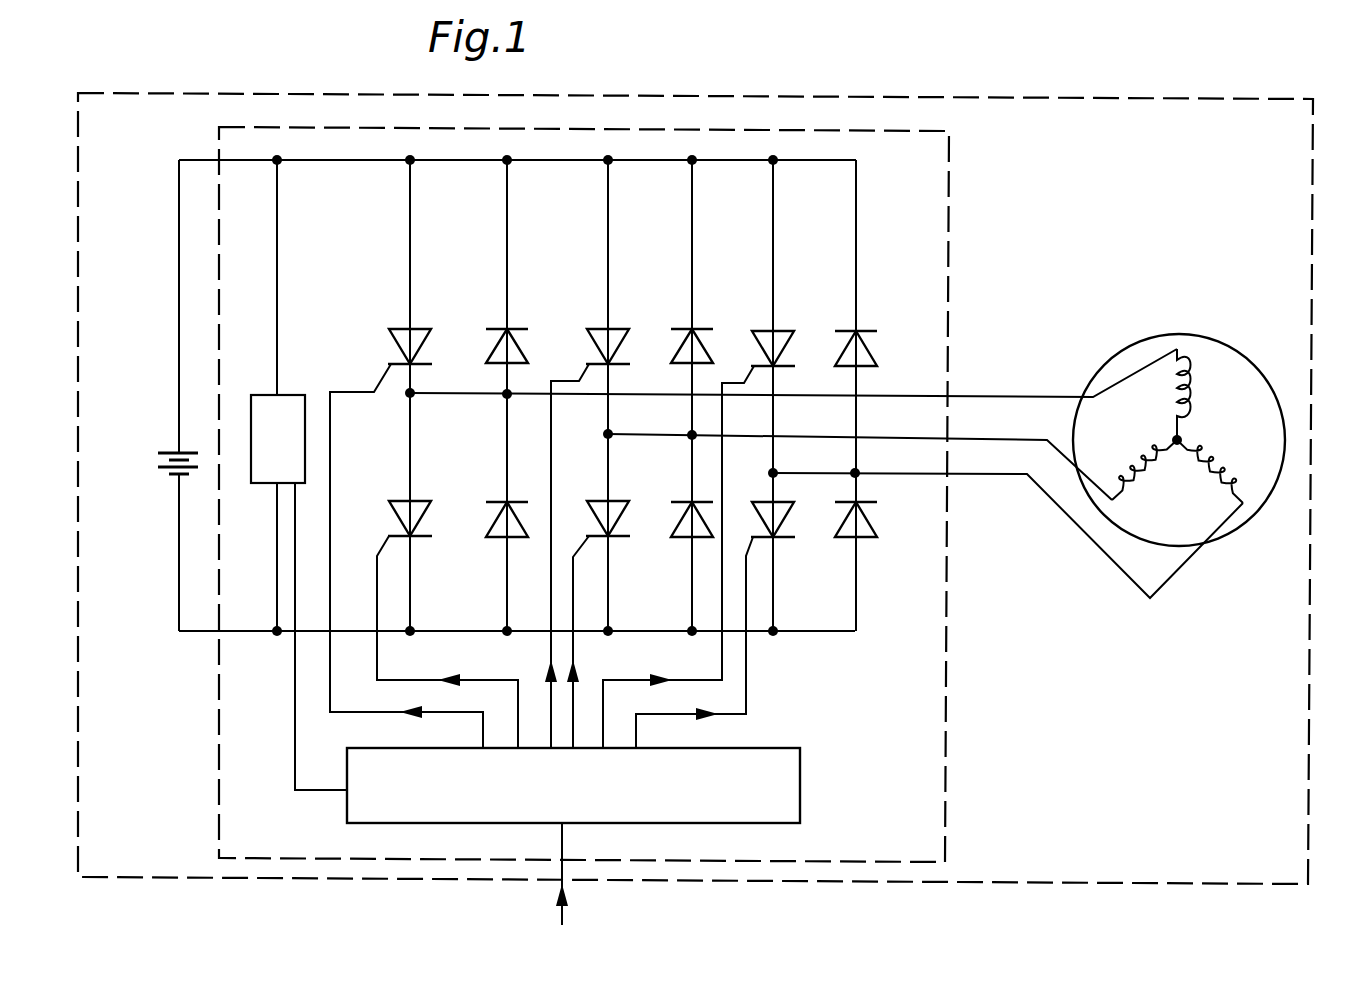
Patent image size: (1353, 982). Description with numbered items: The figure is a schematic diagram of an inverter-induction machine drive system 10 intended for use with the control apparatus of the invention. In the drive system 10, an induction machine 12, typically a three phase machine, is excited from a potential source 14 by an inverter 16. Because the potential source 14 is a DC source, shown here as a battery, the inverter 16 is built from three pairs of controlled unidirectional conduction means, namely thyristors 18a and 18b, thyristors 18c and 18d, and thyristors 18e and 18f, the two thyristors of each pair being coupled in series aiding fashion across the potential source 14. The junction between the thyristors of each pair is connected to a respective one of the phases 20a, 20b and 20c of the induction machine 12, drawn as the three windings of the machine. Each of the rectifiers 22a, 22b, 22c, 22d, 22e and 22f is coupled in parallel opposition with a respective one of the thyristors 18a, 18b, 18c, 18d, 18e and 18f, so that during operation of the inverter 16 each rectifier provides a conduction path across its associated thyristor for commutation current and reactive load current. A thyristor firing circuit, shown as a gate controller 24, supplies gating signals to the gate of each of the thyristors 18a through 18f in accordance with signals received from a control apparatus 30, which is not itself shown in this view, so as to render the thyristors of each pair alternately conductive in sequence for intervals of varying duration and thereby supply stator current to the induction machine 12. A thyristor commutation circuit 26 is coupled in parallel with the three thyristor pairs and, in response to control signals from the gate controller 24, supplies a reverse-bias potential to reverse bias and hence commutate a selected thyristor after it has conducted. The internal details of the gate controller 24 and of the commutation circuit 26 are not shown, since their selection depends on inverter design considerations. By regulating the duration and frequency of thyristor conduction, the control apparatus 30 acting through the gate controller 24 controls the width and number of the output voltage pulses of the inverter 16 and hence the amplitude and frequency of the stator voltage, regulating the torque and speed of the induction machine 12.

The inverter-induction machine drive system 10 is at (196, 859).
The induction machine 12 is at (1236, 354).
The potential source 14 is at (171, 453).
The inverter 16 is at (308, 828).
The thyristor 18a is at (401, 329).
The thyristor 18b is at (411, 500).
The thyristor 18c is at (613, 329).
The thyristor 18d is at (607, 501).
The thyristor 18e is at (776, 331).
The thyristor 18f is at (775, 538).
The phase 20a is at (1185, 401).
The phase 20b is at (1138, 458).
The phase 20c is at (1198, 462).
The rectifier 22a is at (512, 329).
The rectifier 22b is at (492, 522).
The rectifier 22c is at (694, 329).
The rectifier 22d is at (680, 522).
The rectifier 22e is at (861, 331).
The rectifier 22f is at (860, 538).
The gate controller 24 is at (581, 814).
The thyristor commutation circuit 26 is at (290, 450).
The control apparatus 30 is at (804, 928).